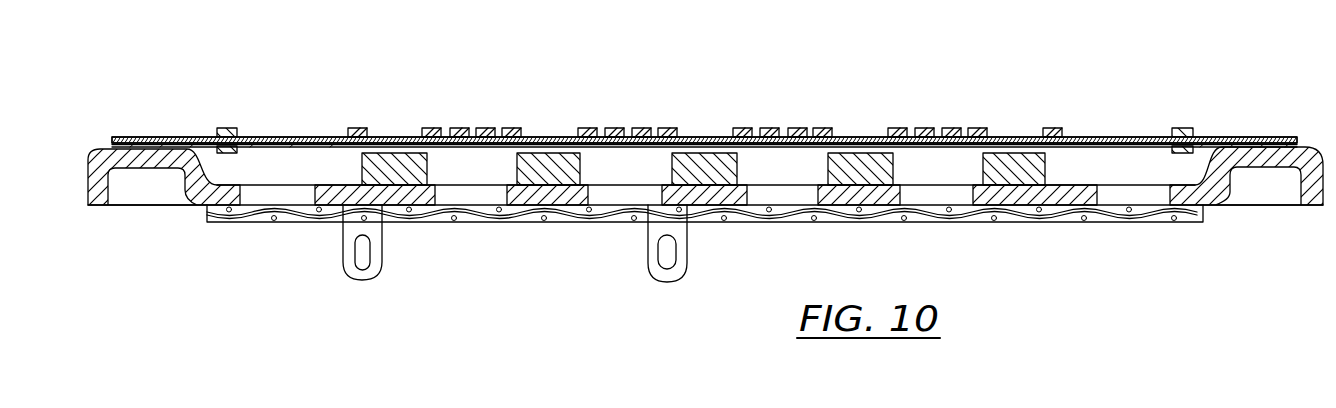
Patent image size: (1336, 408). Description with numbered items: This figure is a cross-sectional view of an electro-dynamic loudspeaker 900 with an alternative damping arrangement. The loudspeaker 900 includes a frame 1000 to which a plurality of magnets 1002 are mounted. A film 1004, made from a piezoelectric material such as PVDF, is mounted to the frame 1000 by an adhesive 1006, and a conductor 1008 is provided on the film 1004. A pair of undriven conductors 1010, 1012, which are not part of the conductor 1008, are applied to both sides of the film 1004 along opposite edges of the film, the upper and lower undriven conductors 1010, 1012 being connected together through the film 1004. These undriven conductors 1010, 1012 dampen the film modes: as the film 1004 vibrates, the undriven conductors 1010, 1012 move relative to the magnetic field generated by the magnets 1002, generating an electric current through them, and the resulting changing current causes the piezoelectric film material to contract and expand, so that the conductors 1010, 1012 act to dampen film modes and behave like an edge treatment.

The electro-dynamic loudspeaker 900 is at (704, 147).
The frame 1000 is at (1215, 190).
The magnets 1002 is at (394, 167).
The film 1004 is at (1093, 137).
The adhesive 1006 is at (1257, 140).
The conductor 1008 is at (628, 117).
The undriven upper conductor 1010 is at (227, 127).
The undriven lower conductor 1012 is at (227, 155).